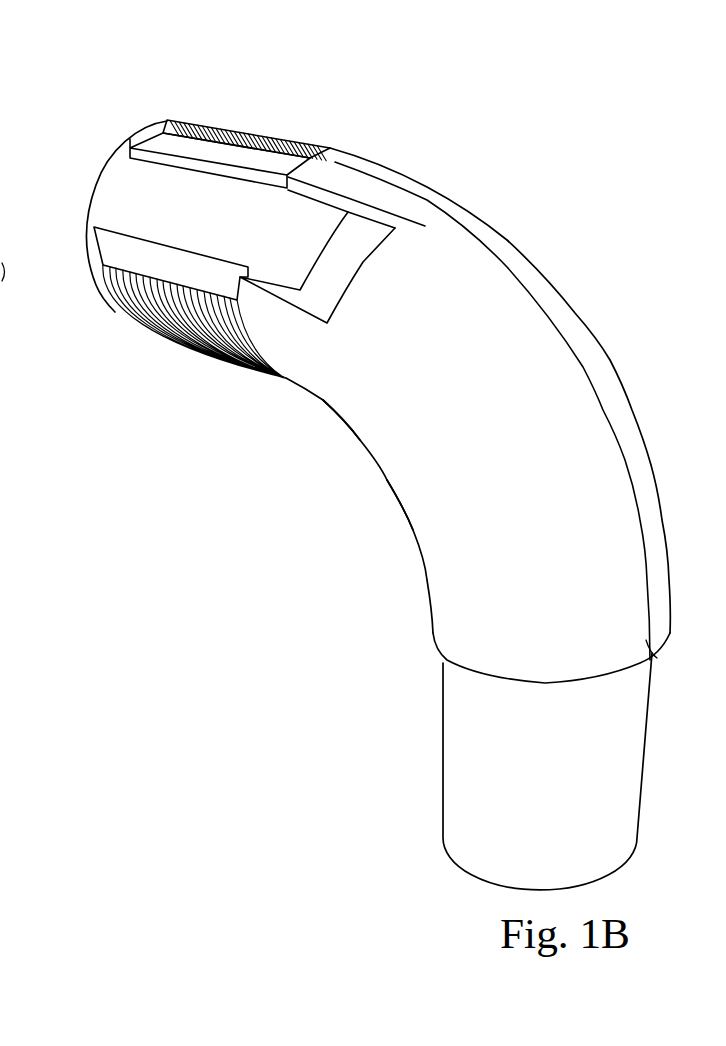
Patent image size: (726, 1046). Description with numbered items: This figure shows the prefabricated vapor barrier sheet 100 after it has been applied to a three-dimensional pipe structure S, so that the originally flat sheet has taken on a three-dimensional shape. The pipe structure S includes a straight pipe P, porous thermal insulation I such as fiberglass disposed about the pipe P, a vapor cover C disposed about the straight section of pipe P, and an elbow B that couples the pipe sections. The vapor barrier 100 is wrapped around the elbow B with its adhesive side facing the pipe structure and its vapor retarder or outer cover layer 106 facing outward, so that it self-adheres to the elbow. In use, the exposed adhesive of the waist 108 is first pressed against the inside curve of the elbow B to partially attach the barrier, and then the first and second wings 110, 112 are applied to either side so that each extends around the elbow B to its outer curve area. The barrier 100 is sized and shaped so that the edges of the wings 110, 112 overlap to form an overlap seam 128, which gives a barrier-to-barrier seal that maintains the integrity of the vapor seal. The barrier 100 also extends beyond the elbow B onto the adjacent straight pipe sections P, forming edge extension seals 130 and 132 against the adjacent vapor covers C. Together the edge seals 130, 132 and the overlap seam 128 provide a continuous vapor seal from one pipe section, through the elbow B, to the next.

The vapor barrier sheet 100 is at (517, 248).
The vapor retarder layer/outer cover layer 106 is at (567, 578).
The waist 108 is at (354, 457).
The first wing 110 is at (635, 421).
The second wing 112 is at (467, 417).
The overlap seam 128 is at (581, 367).
The edge extension seal 130 is at (657, 654).
The edge extension seal 132 is at (307, 148).
The pipe P is at (107, 168).
The porous thermal insulation I is at (152, 140).
The elbow B is at (312, 226).
The vapor cover C is at (177, 345).
The pipe structure S is at (589, 106).